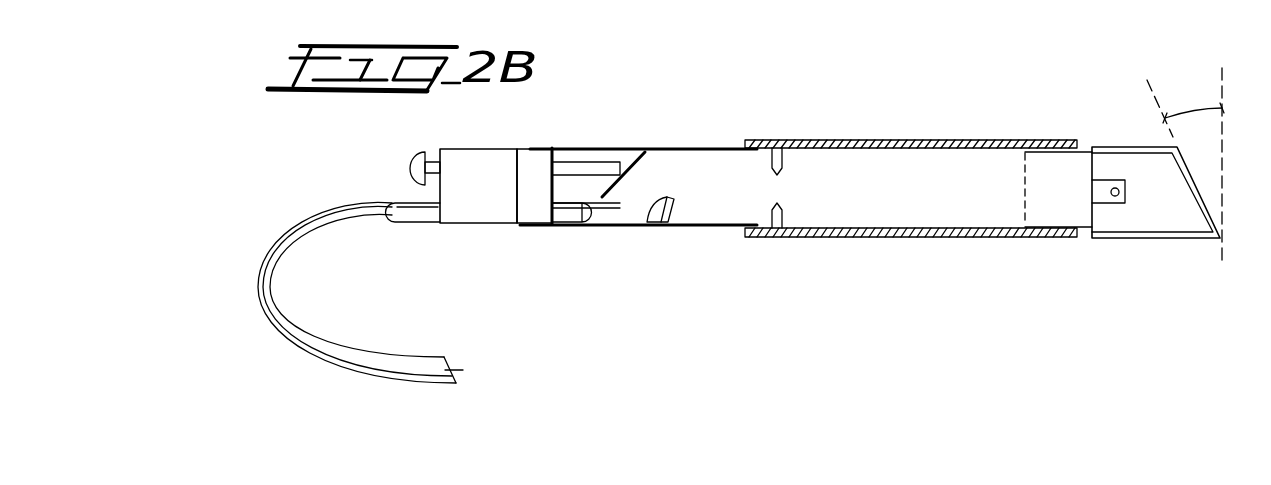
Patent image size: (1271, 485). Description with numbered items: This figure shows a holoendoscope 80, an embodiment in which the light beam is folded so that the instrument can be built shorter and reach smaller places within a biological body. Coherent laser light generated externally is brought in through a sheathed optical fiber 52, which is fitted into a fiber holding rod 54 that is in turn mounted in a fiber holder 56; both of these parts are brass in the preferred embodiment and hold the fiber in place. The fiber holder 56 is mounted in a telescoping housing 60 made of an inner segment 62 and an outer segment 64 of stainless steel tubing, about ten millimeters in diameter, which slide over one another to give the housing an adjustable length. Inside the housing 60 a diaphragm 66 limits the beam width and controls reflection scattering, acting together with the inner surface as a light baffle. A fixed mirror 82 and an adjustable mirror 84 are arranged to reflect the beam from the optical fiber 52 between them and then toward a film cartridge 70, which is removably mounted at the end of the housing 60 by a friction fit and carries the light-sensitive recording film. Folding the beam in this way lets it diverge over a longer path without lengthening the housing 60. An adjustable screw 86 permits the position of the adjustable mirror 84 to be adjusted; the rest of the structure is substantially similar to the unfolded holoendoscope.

The sheathed optical fiber 52 is at (312, 348).
The fiber holding rod 54 is at (420, 224).
The fiber holder 56 is at (487, 149).
The telescoping housing 60 is at (775, 135).
The inner segment 62 is at (685, 148).
The outer segment 64 is at (865, 140).
The diaphragm 66 is at (784, 158).
The film cartridge 70 is at (1135, 238).
The holoendoscope 80 is at (843, 107).
The fixed mirror 82 is at (674, 199).
The adjustable mirror 84 is at (634, 169).
The adjustable screw 86 is at (414, 155).